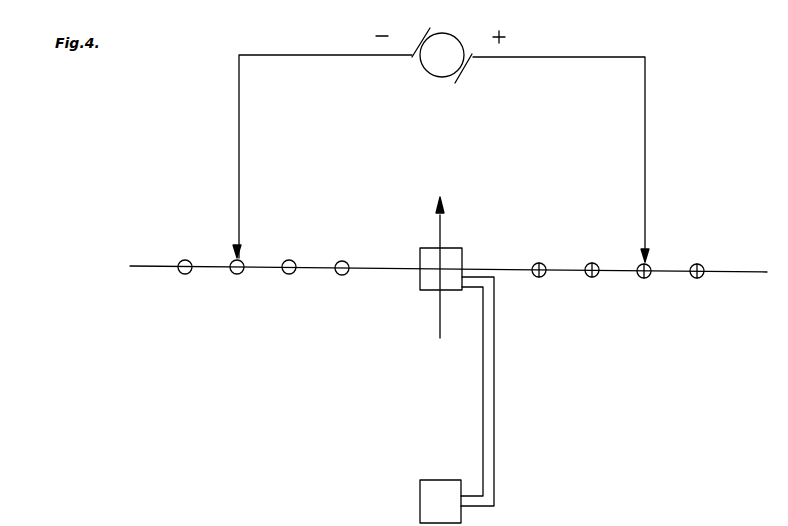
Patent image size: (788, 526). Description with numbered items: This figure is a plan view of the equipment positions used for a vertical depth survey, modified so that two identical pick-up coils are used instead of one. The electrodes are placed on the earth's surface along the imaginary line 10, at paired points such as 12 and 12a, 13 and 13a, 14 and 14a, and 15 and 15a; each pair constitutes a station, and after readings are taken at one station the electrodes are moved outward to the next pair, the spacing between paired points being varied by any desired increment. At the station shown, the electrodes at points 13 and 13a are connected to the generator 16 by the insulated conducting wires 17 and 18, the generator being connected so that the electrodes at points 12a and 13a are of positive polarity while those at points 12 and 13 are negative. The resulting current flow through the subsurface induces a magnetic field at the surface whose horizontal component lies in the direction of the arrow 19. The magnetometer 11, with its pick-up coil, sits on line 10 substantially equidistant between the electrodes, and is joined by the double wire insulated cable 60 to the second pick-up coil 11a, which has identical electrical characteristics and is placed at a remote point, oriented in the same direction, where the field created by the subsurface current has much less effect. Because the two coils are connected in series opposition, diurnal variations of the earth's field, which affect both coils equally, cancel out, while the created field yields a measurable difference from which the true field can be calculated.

The imaginary line 10 is at (141, 266).
The magnetometer 11 is at (420, 278).
The second pick-up coil 11a is at (420, 497).
The electrode point 12 is at (186, 278).
The electrode point 13 is at (238, 278).
The electrode point 14 is at (290, 278).
The electrode point 15 is at (343, 279).
The electrode point 12a is at (696, 281).
The electrode point 13a is at (644, 281).
The electrode point 14a is at (591, 281).
The electrode point 15a is at (539, 281).
The generator 16 is at (427, 71).
The insulated conducting wire 17 is at (325, 55).
The insulated conducting wire 18 is at (603, 57).
The arrow 19 is at (442, 233).
The double wire insulated cable 60 is at (495, 402).